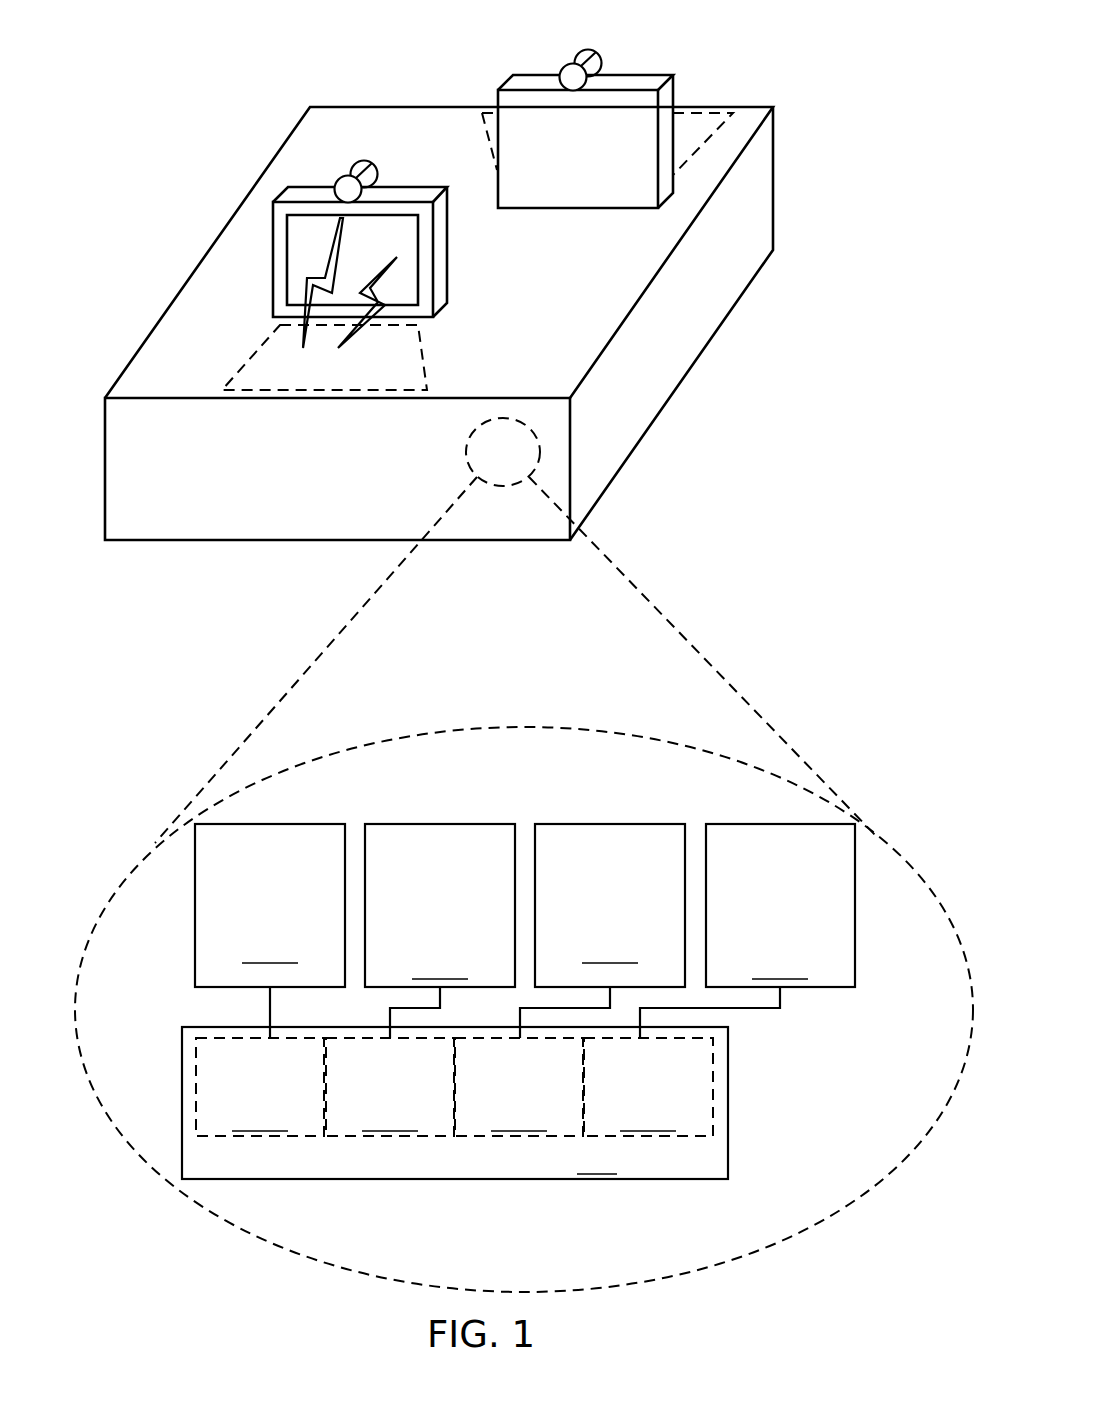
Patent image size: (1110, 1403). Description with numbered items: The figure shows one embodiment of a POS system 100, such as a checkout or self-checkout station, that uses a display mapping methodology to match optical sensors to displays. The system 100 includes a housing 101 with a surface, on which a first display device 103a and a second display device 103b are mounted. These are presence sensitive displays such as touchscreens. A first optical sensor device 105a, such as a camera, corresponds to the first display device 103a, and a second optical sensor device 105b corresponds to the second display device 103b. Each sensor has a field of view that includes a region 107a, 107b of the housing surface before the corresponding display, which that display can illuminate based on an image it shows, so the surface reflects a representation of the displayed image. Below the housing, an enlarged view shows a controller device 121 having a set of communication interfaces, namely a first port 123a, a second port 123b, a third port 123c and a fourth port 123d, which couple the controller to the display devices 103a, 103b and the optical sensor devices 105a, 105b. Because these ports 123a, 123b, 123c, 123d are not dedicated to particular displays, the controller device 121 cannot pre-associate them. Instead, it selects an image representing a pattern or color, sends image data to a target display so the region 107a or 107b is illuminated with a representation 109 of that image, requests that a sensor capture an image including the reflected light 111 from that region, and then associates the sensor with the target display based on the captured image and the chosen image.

The POS system 100 is at (515, 646).
The housing 101 is at (777, 152).
The first display device 103a is at (283, 196).
The second display device 103b is at (657, 77).
The first optical sensor device 105a is at (353, 163).
The second optical sensor device 105b is at (568, 62).
The first region 107a is at (263, 360).
The second region 107b is at (703, 124).
The representation of the certain image 109 is at (382, 300).
The reflected light 111 is at (312, 272).
The controller device 121 is at (455, 1103).
The first port 123a is at (260, 1087).
The second port 123b is at (390, 1087).
The third port 123c is at (519, 1087).
The fourth port 123d is at (648, 1087).